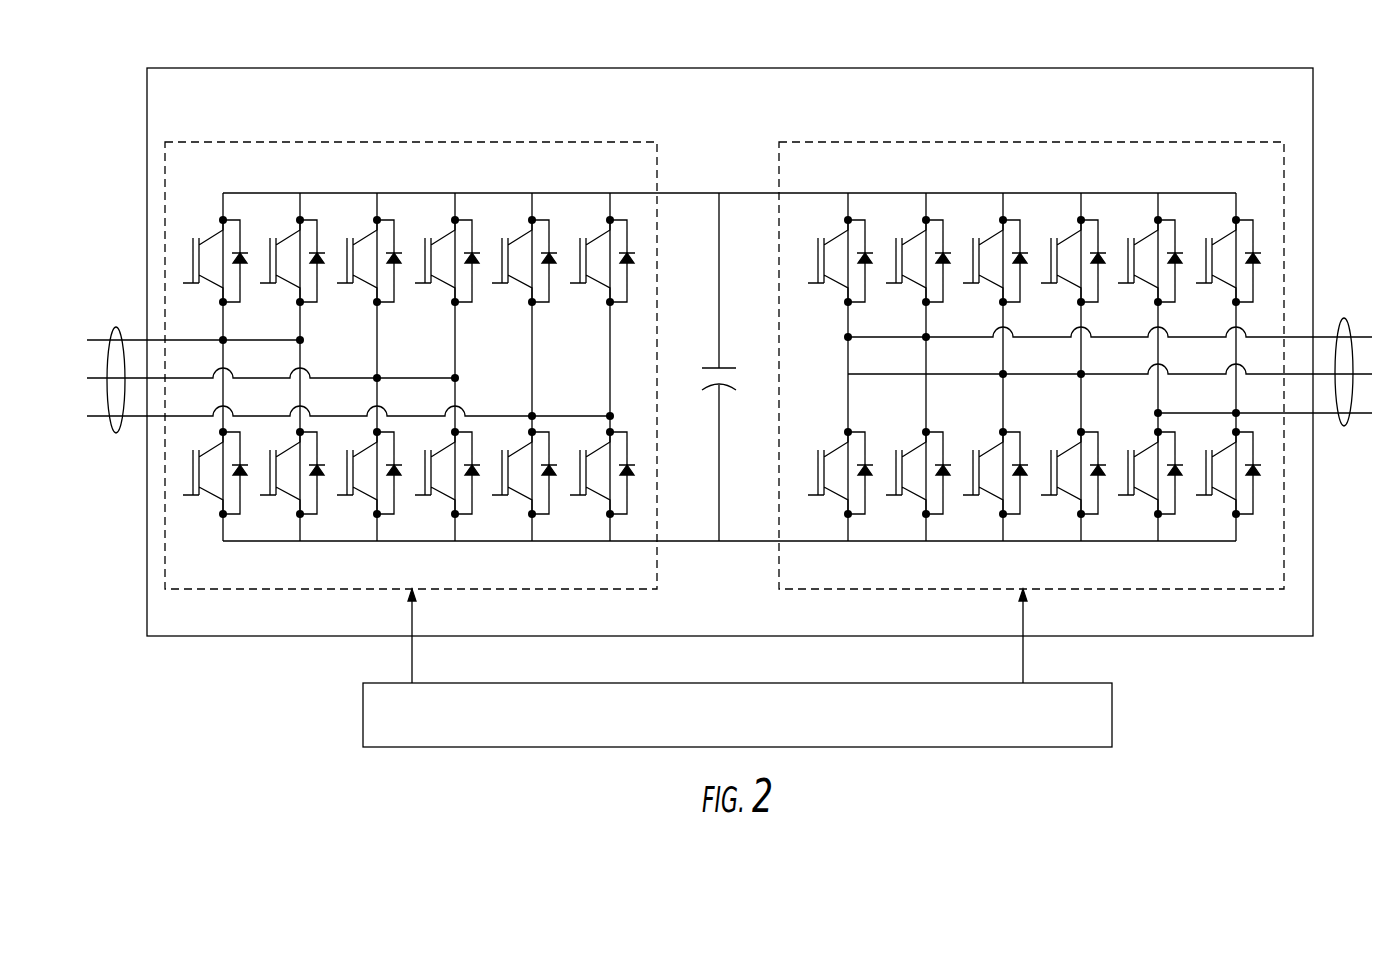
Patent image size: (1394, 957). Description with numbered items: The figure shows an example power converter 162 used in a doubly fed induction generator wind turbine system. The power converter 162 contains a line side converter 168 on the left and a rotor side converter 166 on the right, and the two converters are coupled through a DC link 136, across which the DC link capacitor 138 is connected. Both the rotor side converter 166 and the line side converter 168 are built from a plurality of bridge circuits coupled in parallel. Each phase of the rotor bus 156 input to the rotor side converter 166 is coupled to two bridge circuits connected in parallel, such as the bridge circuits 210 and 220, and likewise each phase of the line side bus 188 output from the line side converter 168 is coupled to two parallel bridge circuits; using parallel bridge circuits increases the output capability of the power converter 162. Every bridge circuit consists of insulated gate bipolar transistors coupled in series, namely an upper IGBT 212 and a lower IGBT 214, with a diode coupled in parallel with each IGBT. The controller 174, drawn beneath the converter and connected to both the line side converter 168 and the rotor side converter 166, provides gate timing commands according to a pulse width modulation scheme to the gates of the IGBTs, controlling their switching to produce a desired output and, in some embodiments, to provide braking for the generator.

The power converter 162 is at (806, 68).
The line side converter 168 is at (375, 143).
The rotor side converter 166 is at (1031, 337).
The DC link 136 is at (682, 192).
The DC link capacitor 138 is at (727, 368).
The bridge circuit 210 is at (852, 192).
The bridge circuit 220 is at (930, 192).
The upper IGBT 212 is at (812, 284).
The lower IGBT 214 is at (818, 467).
The line side bus 188 is at (116, 327).
The rotor bus 156 is at (1344, 318).
The controller 174 is at (1112, 718).